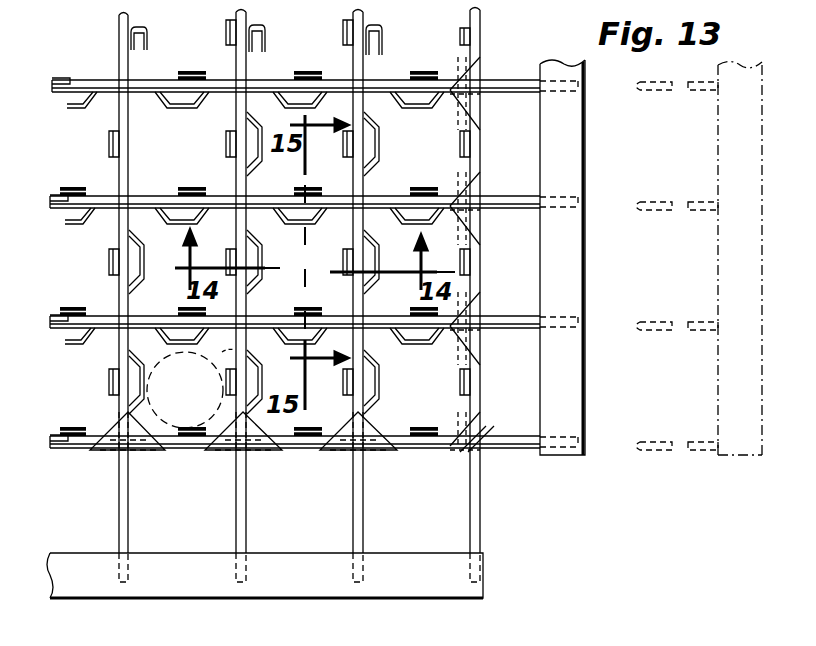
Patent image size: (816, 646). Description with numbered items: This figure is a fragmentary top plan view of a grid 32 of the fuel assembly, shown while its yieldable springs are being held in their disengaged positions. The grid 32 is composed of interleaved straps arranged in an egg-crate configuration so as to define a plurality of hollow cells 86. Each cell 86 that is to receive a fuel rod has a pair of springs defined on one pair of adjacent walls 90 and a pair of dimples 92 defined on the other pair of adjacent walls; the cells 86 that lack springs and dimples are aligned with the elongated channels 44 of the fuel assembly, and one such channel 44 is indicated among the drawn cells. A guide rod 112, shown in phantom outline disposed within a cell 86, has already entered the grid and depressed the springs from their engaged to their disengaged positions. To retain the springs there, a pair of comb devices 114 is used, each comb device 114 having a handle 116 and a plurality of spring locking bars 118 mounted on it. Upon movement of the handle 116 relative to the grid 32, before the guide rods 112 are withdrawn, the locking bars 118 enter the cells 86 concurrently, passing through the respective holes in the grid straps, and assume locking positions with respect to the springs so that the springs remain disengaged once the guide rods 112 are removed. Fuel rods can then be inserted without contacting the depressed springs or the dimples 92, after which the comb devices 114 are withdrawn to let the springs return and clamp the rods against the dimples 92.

The grid 32 is at (90, 58).
The elongated channel 44 is at (200, 150).
The hollow cell 86 is at (447, 118).
The adjacent wall 90 is at (178, 452).
The dimple 92 is at (150, 395).
The guide rod 112 is at (230, 352).
The comb device 114 is at (550, 460).
The handle 116 is at (395, 600).
The spring locking bar 118 is at (240, 22).